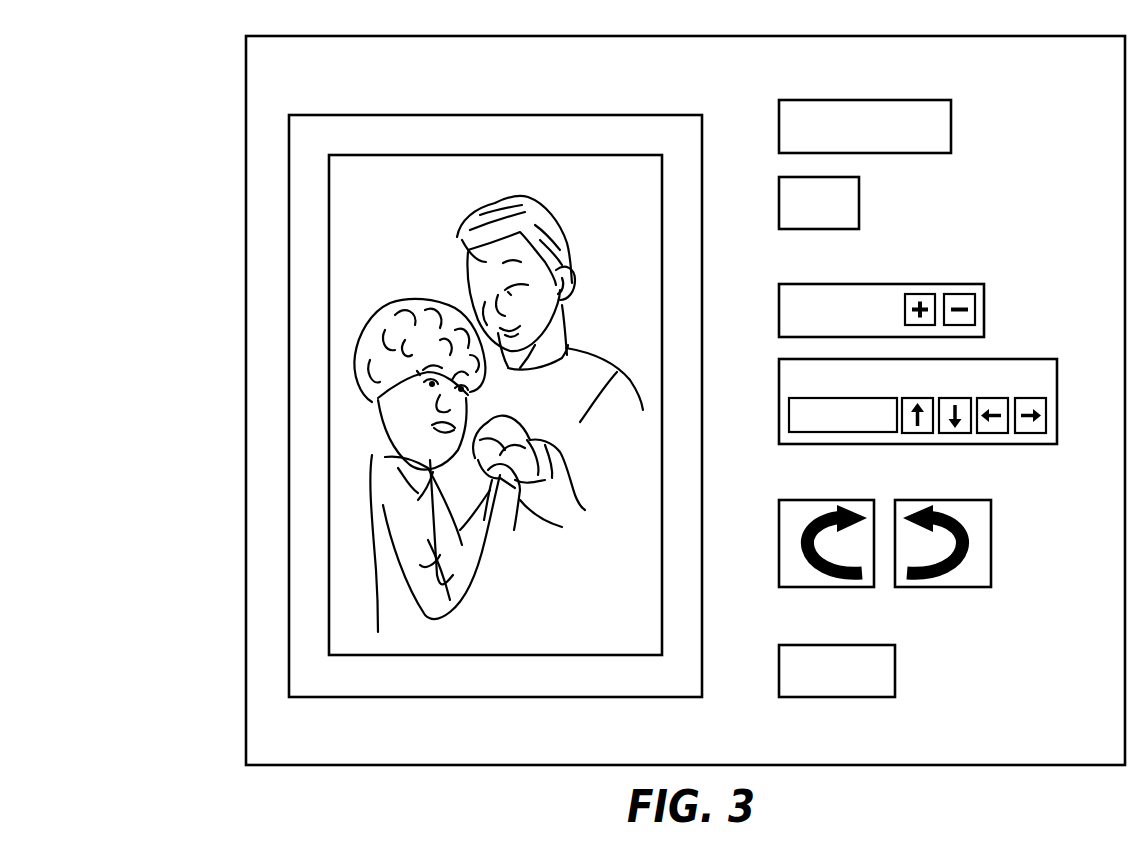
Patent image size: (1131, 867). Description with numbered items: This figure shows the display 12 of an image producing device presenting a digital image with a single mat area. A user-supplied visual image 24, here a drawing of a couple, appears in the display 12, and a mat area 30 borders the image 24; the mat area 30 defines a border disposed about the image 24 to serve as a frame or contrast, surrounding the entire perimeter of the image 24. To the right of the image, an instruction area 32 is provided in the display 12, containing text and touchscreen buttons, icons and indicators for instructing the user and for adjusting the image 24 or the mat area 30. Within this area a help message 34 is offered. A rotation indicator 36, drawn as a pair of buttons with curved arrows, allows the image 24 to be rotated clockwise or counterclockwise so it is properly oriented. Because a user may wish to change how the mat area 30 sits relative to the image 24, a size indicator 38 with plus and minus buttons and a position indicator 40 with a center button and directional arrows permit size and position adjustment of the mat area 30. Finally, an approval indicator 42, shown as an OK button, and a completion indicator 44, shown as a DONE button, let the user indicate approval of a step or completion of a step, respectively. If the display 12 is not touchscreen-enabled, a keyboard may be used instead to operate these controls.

The display 12 is at (243, 89).
The user-supplied visual image 24 is at (338, 470).
The mat area 30 is at (301, 536).
The instruction area 32 is at (889, 346).
The help message 34 is at (780, 130).
The rotation indicator 36 is at (780, 545).
The size indicator 38 is at (780, 310).
The position indicator 40 is at (780, 405).
The approval indicator 42 is at (780, 205).
The completion indicator 44 is at (780, 673).